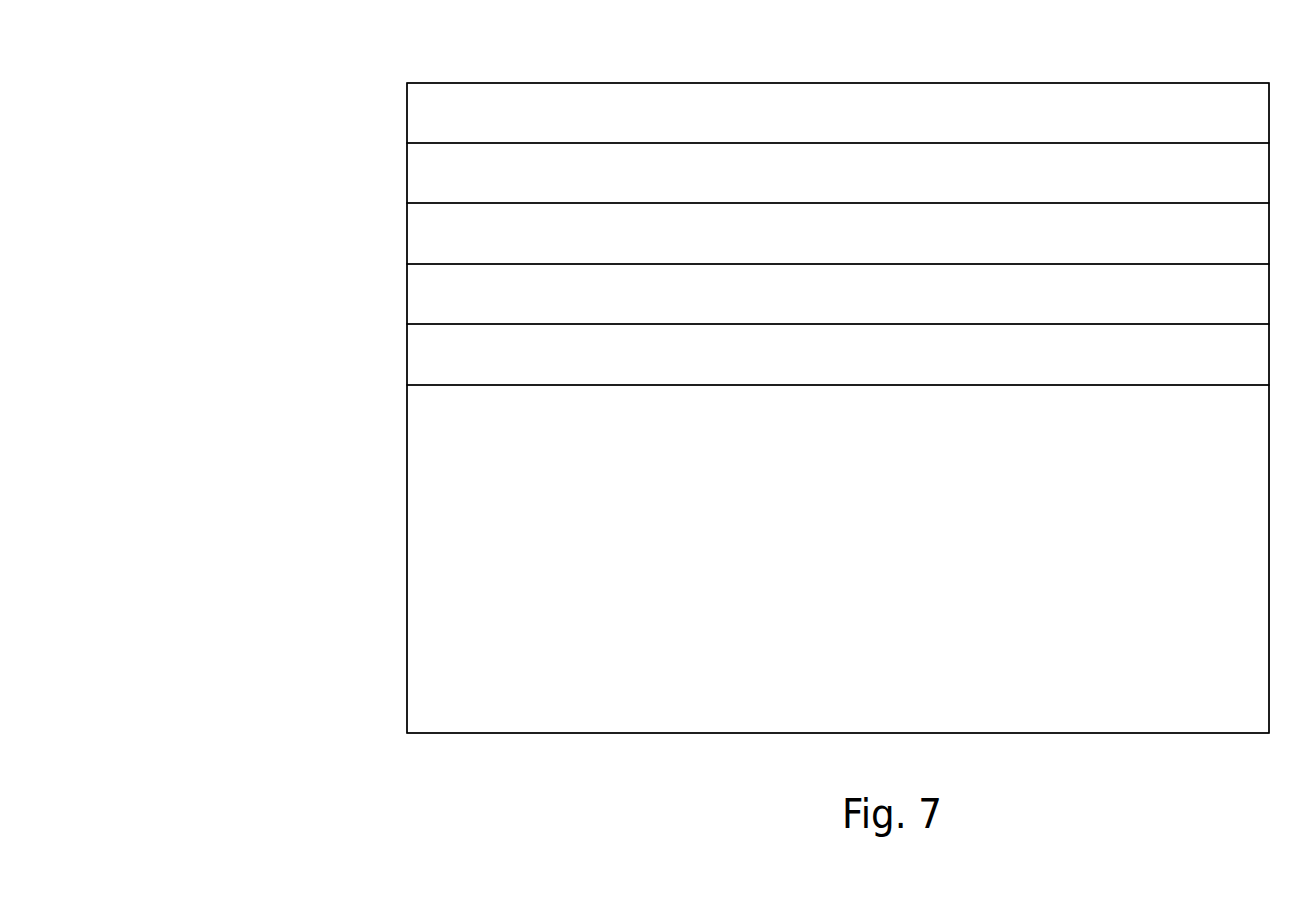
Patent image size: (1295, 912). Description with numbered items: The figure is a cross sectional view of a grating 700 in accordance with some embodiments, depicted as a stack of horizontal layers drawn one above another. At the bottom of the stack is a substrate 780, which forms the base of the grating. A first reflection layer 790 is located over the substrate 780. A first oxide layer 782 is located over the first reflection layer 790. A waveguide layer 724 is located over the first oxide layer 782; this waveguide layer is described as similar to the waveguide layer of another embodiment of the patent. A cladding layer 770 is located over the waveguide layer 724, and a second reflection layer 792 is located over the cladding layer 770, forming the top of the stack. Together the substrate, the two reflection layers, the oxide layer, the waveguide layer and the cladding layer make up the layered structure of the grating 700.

The grating 700 is at (226, 62).
The second reflection layer 792 is at (425, 118).
The cladding layer 770 is at (425, 178).
The waveguide layer 724 is at (425, 238).
The first oxide layer 782 is at (425, 299).
The first reflection layer 790 is at (425, 359).
The substrate 780 is at (425, 572).